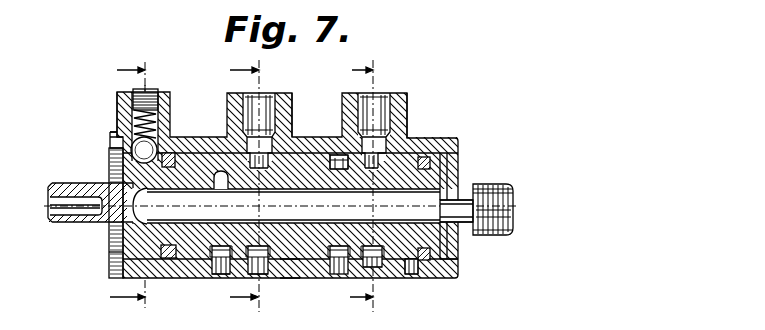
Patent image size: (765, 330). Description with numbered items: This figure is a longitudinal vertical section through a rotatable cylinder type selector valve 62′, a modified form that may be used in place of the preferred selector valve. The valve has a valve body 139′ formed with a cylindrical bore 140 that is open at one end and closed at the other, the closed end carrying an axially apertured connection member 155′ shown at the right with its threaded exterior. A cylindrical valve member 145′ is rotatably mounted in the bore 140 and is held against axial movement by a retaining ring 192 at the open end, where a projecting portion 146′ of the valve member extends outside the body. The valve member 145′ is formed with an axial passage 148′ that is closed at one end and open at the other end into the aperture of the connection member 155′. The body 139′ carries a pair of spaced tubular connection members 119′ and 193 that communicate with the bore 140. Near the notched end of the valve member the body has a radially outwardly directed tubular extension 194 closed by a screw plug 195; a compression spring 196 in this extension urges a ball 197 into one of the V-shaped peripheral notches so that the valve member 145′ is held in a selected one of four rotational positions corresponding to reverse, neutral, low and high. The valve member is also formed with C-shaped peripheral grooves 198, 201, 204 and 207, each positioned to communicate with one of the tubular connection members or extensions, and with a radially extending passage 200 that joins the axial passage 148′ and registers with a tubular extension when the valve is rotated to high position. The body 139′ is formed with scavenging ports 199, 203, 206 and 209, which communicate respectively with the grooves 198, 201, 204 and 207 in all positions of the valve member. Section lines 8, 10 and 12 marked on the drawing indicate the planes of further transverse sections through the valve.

The section line 8 is at (133, 185).
The section line / boss 10 is at (255, 186).
The section line / boss 12 is at (374, 186).
The rotatable cylinder type valve 62′ is at (448, 136).
The tubular connection member 119′ is at (409, 100).
The valve body 139′ is at (437, 278).
The cylindrical bore 140 is at (193, 258).
The cylindrical valve member 145′ is at (189, 167).
The shaft keyway end 146′ is at (67, 226).
The axial passage 148′ is at (300, 214).
The connection member 155′ is at (482, 184).
The retaining ring 192 is at (110, 253).
The tubular connection member 193 is at (295, 106).
The tubular extension 194 is at (117, 108).
The screw plug 195 is at (150, 91).
The compression spring 196 is at (158, 116).
The ball 197 is at (110, 141).
The peripheral C-shaped groove 198 is at (223, 272).
The scavenging port 199 is at (215, 275).
The radially extending passage 200 is at (210, 170).
The peripheral C-shaped groove 201 is at (267, 277).
The scavenging port 203 is at (257, 255).
The C-shaped peripheral groove 204 is at (290, 276).
The scavenging port 206 is at (337, 273).
The C-shaped peripheral groove 207 is at (393, 251).
The scavenging port 209 is at (380, 268).